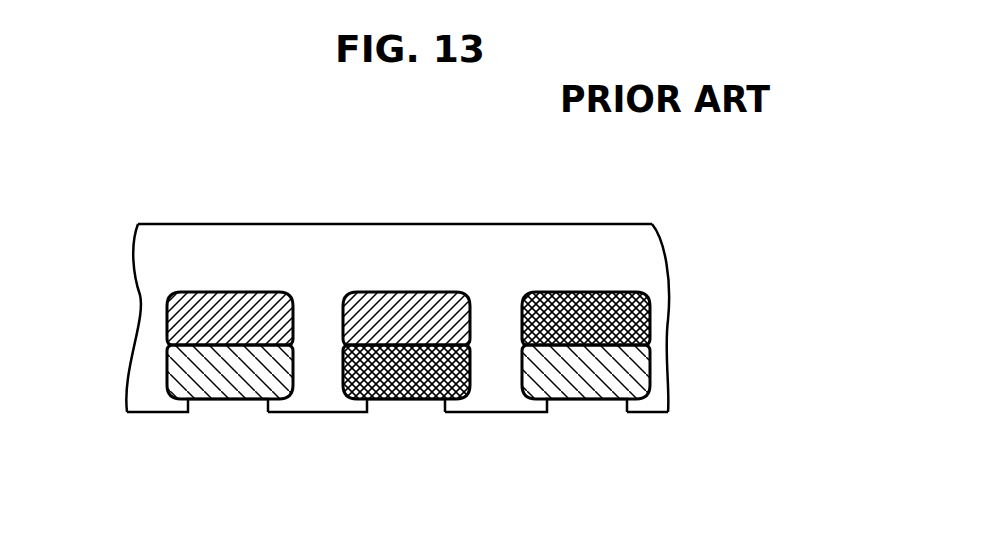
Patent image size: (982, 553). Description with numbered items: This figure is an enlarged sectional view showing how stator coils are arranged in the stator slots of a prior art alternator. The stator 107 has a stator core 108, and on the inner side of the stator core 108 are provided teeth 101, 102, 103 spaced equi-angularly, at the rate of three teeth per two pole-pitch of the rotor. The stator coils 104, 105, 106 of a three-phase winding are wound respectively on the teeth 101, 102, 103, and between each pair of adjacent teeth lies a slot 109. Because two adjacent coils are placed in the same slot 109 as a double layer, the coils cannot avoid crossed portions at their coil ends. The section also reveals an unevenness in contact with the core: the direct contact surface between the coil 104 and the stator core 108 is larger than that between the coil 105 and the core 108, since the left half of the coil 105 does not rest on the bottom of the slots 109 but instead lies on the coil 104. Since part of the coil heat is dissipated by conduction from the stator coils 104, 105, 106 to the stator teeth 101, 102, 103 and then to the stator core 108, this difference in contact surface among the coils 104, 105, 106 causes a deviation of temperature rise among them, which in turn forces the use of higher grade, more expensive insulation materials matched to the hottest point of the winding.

The tooth 101 is at (322, 403).
The tooth 102 is at (505, 405).
The tooth 103 is at (648, 403).
The stator coil 104 is at (393, 310).
The stator coil 105 is at (582, 310).
The stator coil 106 is at (190, 376).
The stator 107 is at (646, 198).
The stator core 108 is at (230, 242).
The slot 109 is at (225, 410).